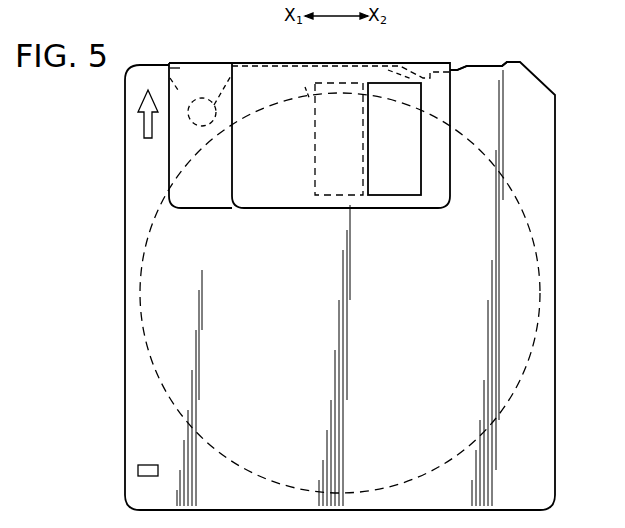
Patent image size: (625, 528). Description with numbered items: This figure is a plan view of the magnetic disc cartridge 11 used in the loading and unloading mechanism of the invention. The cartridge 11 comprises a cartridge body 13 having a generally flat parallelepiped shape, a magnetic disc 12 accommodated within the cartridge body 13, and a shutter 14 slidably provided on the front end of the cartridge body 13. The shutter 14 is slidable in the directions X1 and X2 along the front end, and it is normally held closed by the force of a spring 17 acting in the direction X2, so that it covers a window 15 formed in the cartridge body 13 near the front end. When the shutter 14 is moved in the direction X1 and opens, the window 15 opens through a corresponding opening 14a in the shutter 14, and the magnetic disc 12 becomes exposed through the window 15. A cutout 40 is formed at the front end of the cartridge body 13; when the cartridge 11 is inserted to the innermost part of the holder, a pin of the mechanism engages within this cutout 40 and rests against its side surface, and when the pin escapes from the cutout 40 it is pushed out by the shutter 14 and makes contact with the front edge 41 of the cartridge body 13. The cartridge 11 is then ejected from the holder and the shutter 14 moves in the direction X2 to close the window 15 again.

The magnetic disc cartridge 11 is at (537, 36).
The magnetic disc 12 is at (536, 250).
The cartridge body 13 is at (554, 304).
The shutter 14 is at (268, 72).
The opening 14a is at (425, 182).
The window 15 is at (305, 87).
The spring 17 is at (185, 108).
The cutout 40 is at (418, 70).
The front edge 41 is at (458, 68).